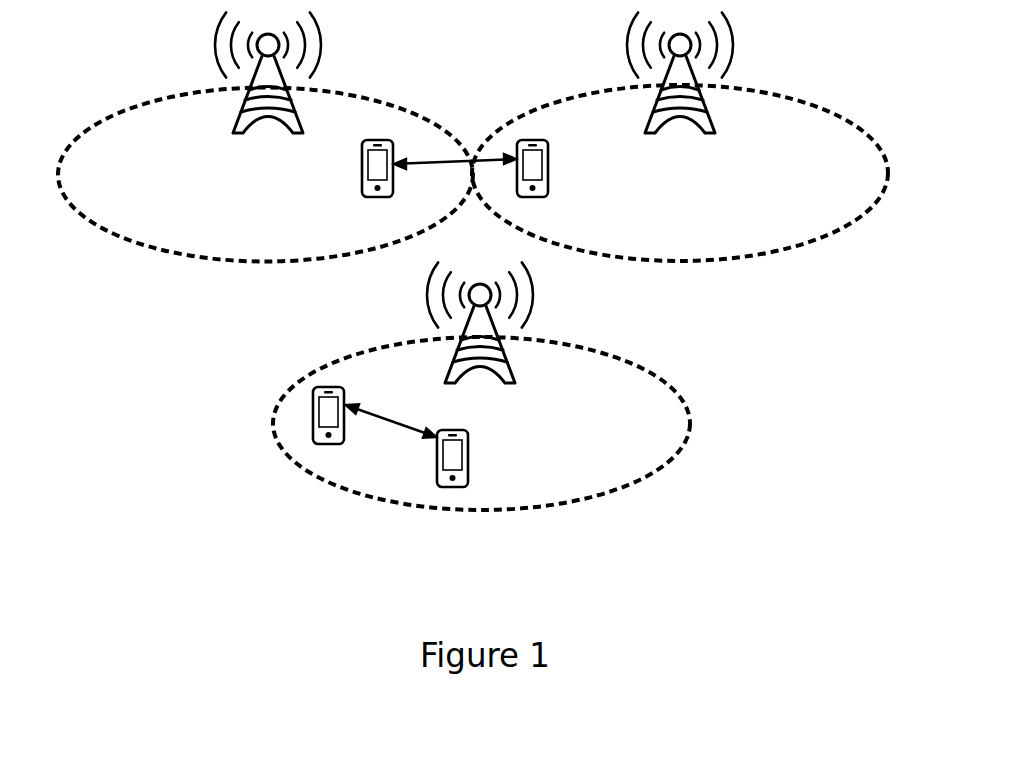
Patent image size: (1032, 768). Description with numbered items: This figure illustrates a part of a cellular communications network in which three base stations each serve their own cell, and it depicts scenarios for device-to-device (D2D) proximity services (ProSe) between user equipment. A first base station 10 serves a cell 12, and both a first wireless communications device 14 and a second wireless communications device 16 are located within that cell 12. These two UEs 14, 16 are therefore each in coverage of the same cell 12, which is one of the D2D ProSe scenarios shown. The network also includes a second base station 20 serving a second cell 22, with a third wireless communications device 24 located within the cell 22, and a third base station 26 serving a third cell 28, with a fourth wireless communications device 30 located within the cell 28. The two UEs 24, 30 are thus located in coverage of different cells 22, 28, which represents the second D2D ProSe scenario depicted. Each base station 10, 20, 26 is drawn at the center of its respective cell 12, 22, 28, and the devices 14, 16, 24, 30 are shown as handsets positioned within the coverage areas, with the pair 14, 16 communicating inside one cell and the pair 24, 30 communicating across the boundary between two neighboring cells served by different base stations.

The first base station 10 is at (533, 294).
The cell 12 is at (686, 405).
The first wireless communications device 14 is at (327, 386).
The second wireless communications device 16 is at (438, 484).
The second base station 20 is at (212, 40).
The second cell 22 is at (65, 150).
The third wireless communications device 24 is at (378, 140).
The third base station 26 is at (735, 40).
The third cell 28 is at (884, 158).
The fourth wireless communications device 30 is at (533, 140).